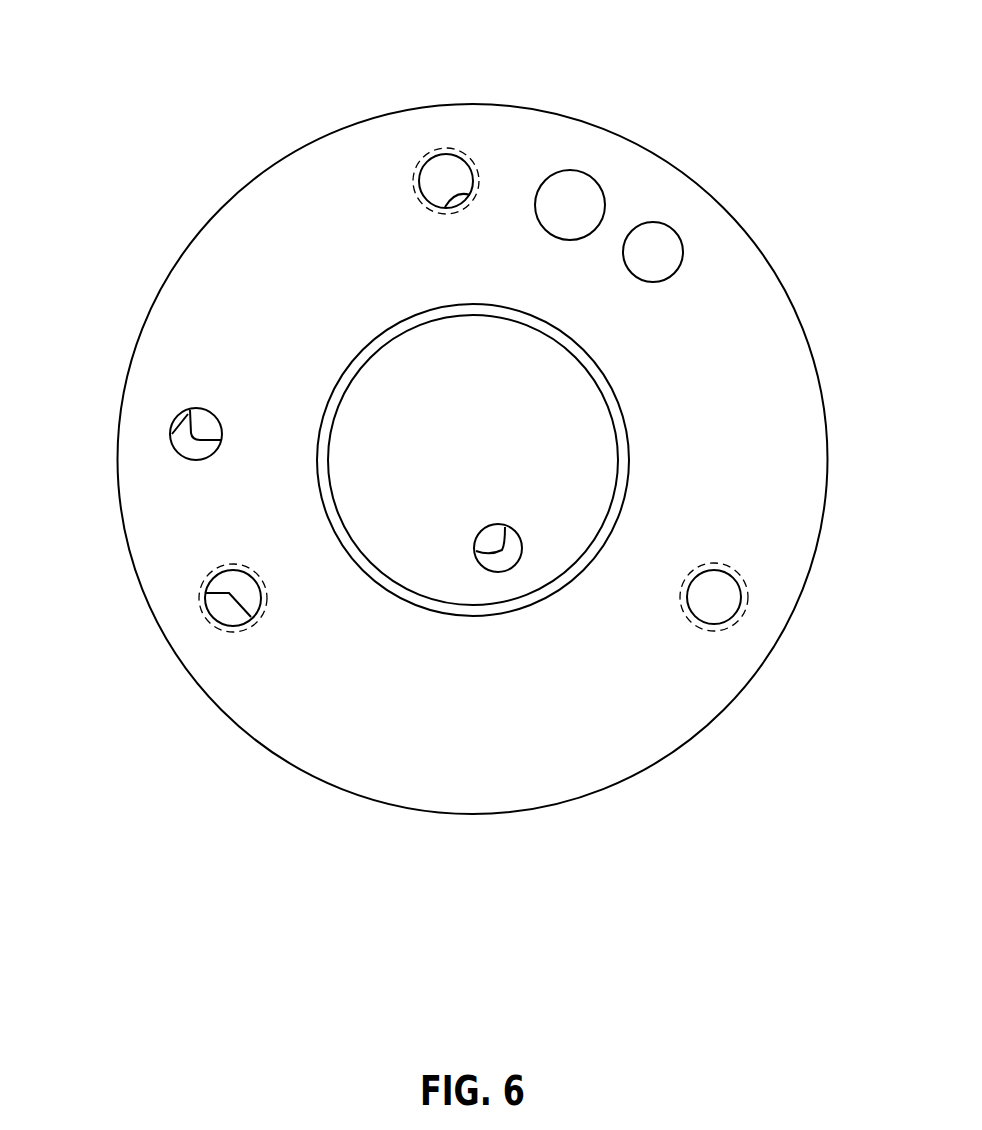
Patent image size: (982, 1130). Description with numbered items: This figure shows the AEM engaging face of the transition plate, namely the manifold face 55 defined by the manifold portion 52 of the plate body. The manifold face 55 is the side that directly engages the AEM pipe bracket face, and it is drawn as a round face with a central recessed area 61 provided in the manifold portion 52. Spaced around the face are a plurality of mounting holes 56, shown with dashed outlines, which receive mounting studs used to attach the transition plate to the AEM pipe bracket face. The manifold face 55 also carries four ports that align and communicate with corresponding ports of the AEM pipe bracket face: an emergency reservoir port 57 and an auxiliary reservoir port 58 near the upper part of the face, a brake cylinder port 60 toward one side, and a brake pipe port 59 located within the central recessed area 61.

The manifold portion 52 is at (668, 152).
The manifold face 55 is at (473, 764).
The mounting holes 56 is at (449, 155).
The emergency reservoir port 57 is at (571, 190).
The auxiliary reservoir port 58 is at (683, 264).
The brake pipe port 59 is at (486, 570).
The brake cylinder port 60 is at (172, 420).
The central recessed area 61 is at (328, 478).